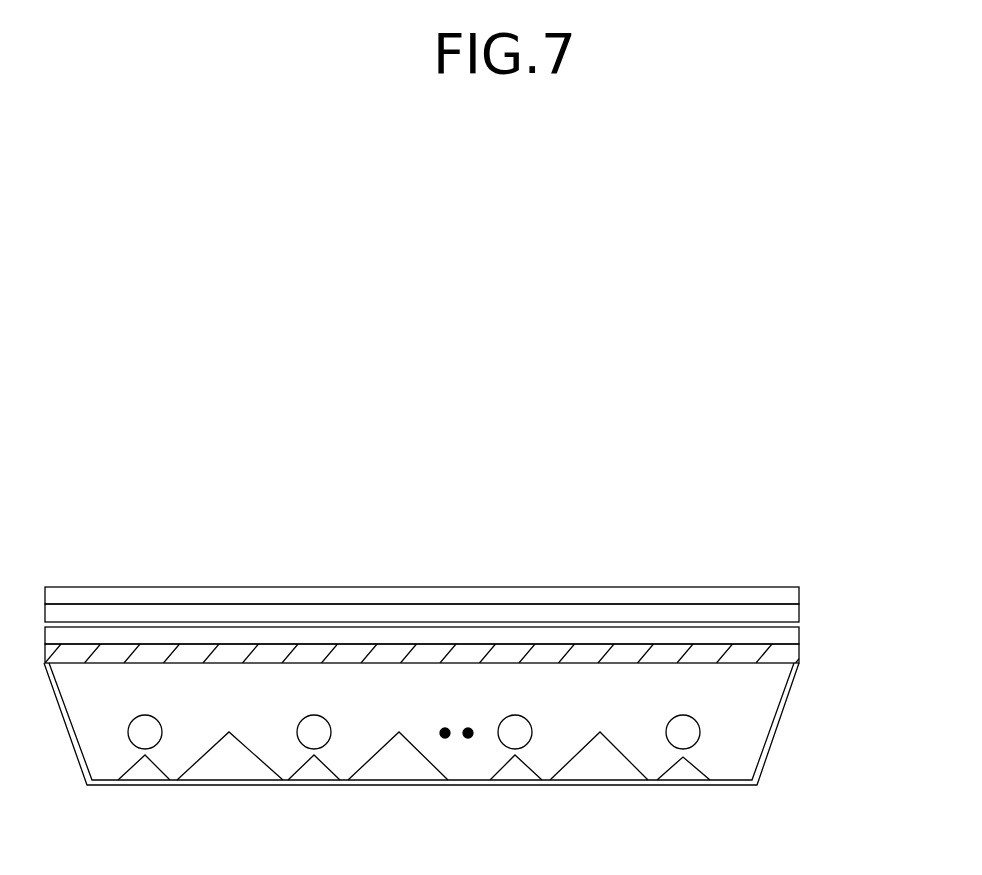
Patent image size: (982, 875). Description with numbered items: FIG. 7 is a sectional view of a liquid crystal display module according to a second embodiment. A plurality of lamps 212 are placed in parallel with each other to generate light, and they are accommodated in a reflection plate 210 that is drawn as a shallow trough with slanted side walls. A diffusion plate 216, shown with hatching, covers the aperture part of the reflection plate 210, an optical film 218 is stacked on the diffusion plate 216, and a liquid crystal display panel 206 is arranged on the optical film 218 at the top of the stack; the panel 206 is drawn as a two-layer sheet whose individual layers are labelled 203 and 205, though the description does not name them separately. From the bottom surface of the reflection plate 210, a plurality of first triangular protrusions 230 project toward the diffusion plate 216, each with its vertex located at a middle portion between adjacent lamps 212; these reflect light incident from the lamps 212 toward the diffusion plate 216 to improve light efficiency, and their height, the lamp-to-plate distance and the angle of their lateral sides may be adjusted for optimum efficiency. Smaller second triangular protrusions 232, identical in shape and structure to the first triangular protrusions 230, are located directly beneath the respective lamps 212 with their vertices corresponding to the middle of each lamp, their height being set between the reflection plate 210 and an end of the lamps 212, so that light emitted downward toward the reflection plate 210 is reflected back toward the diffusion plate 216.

The first optical sheet 203 is at (592, 595).
The second optical sheet 205 is at (613, 610).
The liquid crystal display panel 206 is at (440, 550).
The optical film 218 is at (790, 635).
The diffusion plate 216 is at (788, 653).
The reflection plate 210 is at (768, 755).
The lamps 212 is at (700, 727).
The first triangular protrusions 230 is at (215, 770).
The second triangular protrusions 232 is at (320, 770).